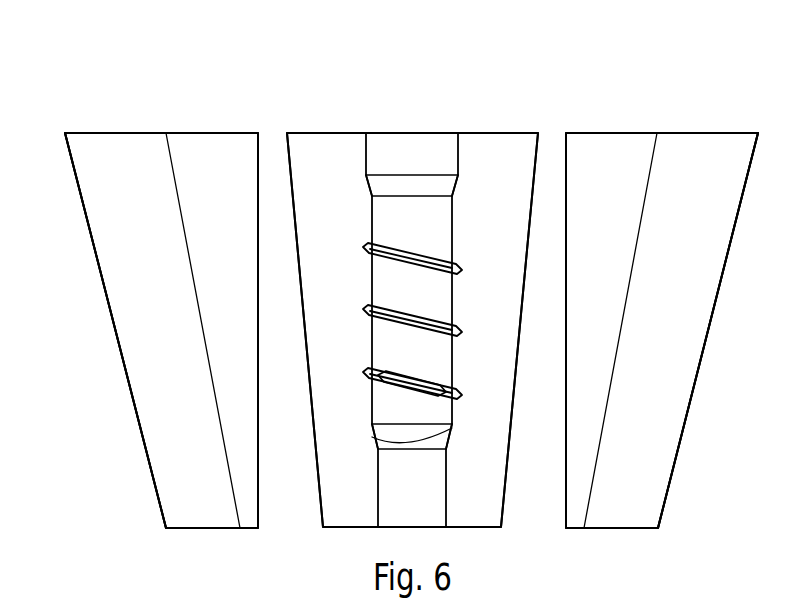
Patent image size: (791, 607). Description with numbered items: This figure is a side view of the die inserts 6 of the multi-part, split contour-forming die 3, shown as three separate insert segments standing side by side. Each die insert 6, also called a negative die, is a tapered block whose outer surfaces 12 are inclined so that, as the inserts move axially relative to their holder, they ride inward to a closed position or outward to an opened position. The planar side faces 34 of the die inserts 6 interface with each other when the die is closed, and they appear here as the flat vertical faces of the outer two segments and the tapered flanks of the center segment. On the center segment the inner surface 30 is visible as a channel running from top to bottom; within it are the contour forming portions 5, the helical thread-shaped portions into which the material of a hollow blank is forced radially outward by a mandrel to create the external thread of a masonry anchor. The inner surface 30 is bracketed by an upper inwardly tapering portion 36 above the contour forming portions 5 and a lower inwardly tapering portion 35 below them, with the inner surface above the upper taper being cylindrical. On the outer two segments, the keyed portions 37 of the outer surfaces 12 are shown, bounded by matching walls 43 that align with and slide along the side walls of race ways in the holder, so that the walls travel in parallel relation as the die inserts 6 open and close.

The contour-forming die 3 is at (118, 52).
The contour forming portions 5 is at (432, 257).
The die inserts 6 is at (152, 133).
The outer surfaces 12 is at (116, 333).
The inner surfaces 30 is at (402, 158).
The planar side faces 34 is at (329, 158).
The lower inwardly tapering portion 35 is at (372, 437).
The upper inwardly tapering portion 36 is at (452, 177).
The keyed portions 37 is at (96, 203).
The matching walls 43 is at (187, 243).